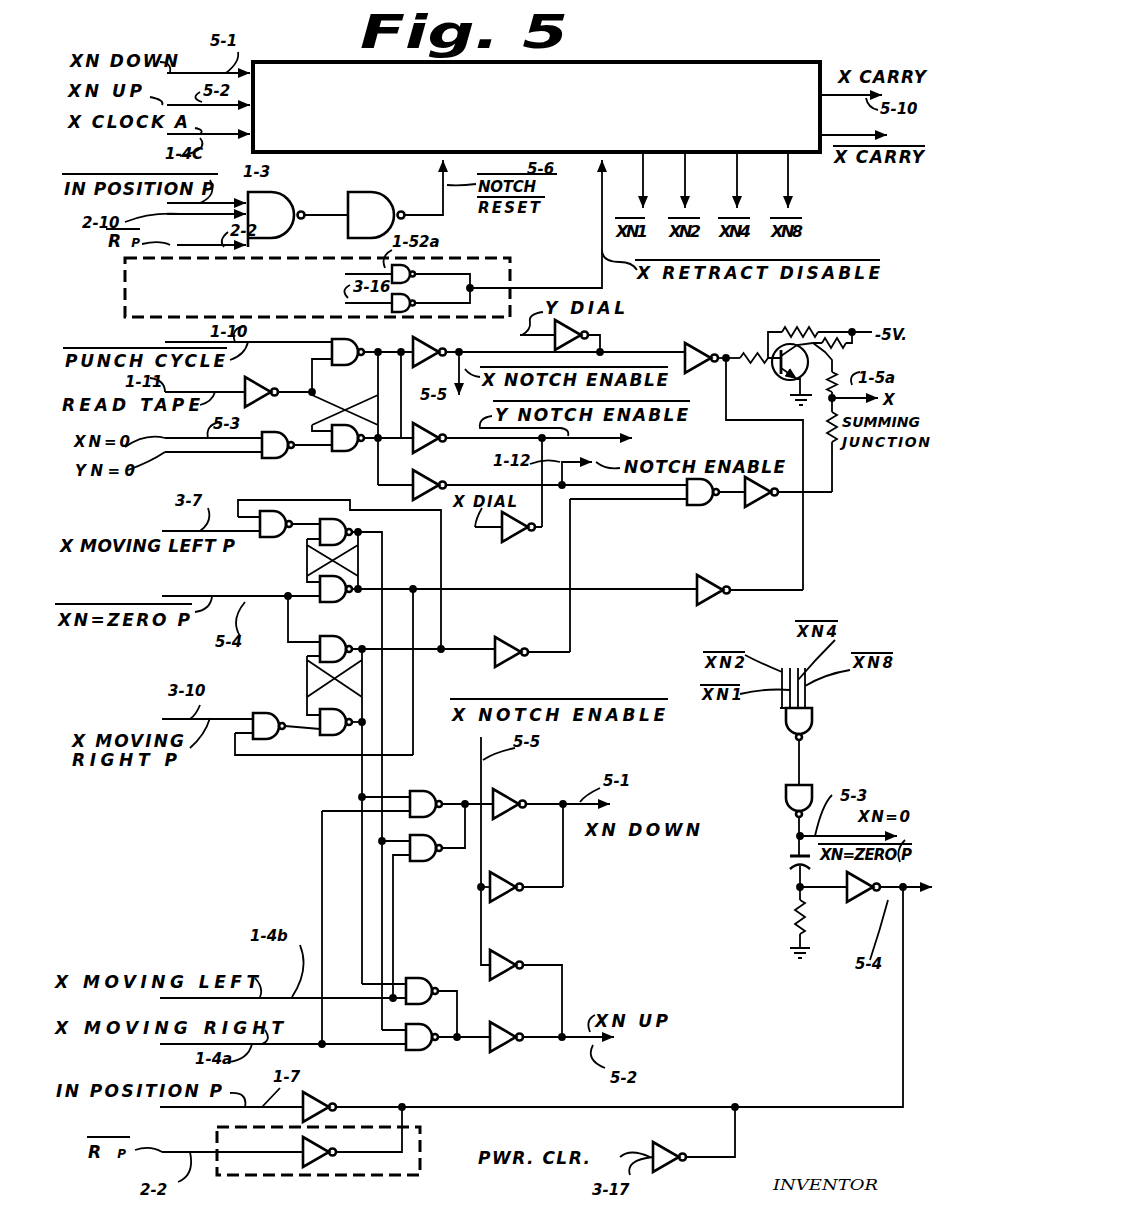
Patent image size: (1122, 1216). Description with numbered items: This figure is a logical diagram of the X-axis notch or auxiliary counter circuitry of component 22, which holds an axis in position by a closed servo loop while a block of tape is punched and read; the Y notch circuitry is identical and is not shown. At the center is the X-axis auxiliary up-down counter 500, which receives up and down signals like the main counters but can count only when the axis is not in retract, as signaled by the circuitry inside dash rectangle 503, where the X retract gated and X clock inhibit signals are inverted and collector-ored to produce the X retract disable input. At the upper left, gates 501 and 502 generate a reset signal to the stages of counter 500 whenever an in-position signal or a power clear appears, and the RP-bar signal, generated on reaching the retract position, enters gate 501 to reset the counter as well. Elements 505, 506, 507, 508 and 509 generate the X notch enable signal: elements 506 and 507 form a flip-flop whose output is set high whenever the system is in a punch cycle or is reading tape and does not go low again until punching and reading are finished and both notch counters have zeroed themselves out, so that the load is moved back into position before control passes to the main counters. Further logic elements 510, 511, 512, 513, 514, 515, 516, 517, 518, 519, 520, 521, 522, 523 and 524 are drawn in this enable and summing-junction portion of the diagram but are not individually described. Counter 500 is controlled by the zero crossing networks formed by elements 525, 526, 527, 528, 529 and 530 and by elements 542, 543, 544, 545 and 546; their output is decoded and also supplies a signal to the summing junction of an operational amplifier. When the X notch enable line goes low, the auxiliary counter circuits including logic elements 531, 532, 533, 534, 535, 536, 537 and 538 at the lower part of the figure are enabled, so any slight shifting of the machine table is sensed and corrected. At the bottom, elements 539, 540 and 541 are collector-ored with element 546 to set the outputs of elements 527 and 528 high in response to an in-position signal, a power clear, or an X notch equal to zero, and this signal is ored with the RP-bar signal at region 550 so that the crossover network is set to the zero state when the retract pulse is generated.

The auxiliary counter component 22 is at (690, 51).
The X-axis auxiliary up-down counter 500 is at (778, 63).
The gate 501 is at (283, 193).
The gate 502 is at (428, 178).
The dash rectangle 503 is at (515, 275).
The logic element 505 is at (262, 379).
The flip-flop gate 506 is at (336, 366).
The flip-flop gate 507 is at (340, 452).
The logic element 508 is at (278, 462).
The logic element 509 is at (441, 347).
The inverter 510 is at (580, 330).
The inverter 511 is at (720, 326).
The resistor 512 is at (754, 353).
The resistor 513 is at (798, 328).
The resistor 514 is at (848, 345).
The ground connection 515 is at (800, 404).
The resistor 516 is at (838, 455).
The transistor 517 is at (786, 377).
The inverter 518 is at (430, 431).
The inverter 519 is at (432, 478).
The inverter 520 is at (518, 542).
The NAND gate 521 is at (698, 508).
The inverter 522 is at (762, 512).
The inverter 523 is at (705, 609).
The inverter 524 is at (548, 621).
The zero crossing network element 525 is at (265, 541).
The zero crossing network element 526 is at (320, 523).
The zero crossing network gate 527 is at (348, 576).
The zero crossing network gate 528 is at (328, 633).
The zero crossing network element 529 is at (330, 738).
The zero crossing network element 530 is at (290, 692).
The auxiliary counter logic element 531 is at (463, 776).
The auxiliary counter logic element 532 is at (424, 866).
The auxiliary counter logic element 533 is at (460, 955).
The auxiliary counter logic element 534 is at (420, 1052).
The auxiliary counter logic element 535 is at (518, 793).
The auxiliary counter logic element 536 is at (550, 862).
The auxiliary counter logic element 537 is at (512, 957).
The auxiliary counter logic element 538 is at (552, 1010).
The collector-ored logic element 539 is at (320, 1095).
The collector-ored logic element 540 is at (316, 1170).
The collector-ored logic element 541 is at (672, 1172).
The zero crossing network element 542 is at (812, 724).
The zero crossing network element 543 is at (788, 797).
The zero crossing network element 544 is at (790, 871).
The zero crossing network element 545 is at (795, 916).
The zero crossing network element 546 is at (862, 903).
The oring region 550 is at (428, 1150).